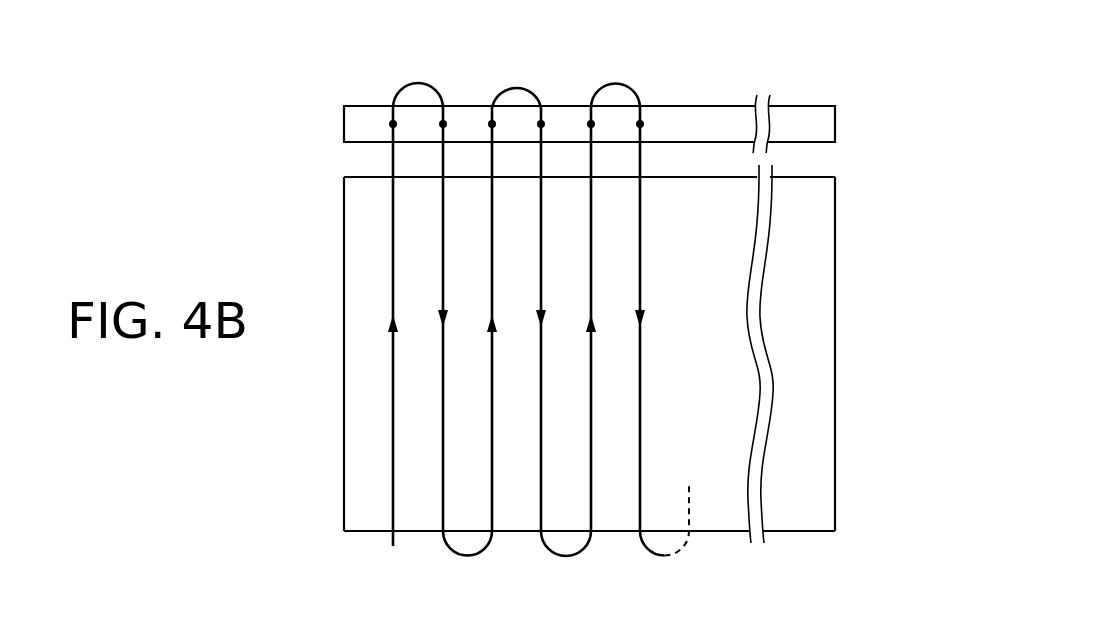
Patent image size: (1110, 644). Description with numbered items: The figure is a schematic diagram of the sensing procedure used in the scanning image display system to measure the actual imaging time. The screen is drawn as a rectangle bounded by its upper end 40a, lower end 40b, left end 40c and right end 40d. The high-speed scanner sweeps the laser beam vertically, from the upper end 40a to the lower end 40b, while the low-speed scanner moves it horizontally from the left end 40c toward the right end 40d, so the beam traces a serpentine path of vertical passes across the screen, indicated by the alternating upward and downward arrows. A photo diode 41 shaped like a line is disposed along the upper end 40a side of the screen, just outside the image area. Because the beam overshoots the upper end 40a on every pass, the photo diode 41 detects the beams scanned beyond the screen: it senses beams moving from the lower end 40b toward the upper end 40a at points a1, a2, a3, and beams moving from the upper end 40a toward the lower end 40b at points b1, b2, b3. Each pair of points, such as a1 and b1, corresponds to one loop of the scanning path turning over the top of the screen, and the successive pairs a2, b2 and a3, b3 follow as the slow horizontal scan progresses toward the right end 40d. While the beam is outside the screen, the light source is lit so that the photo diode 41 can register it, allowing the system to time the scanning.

The photo diode 41 is at (827, 123).
The upper end 40a is at (805, 177).
The lower end 40b is at (795, 533).
The left end 40c is at (344, 493).
The right end 40d is at (835, 438).
The point a1 is at (393, 124).
The point b1 is at (443, 124).
The point a2 is at (492, 124).
The point b2 is at (541, 124).
The point a3 is at (591, 124).
The point b3 is at (640, 124).